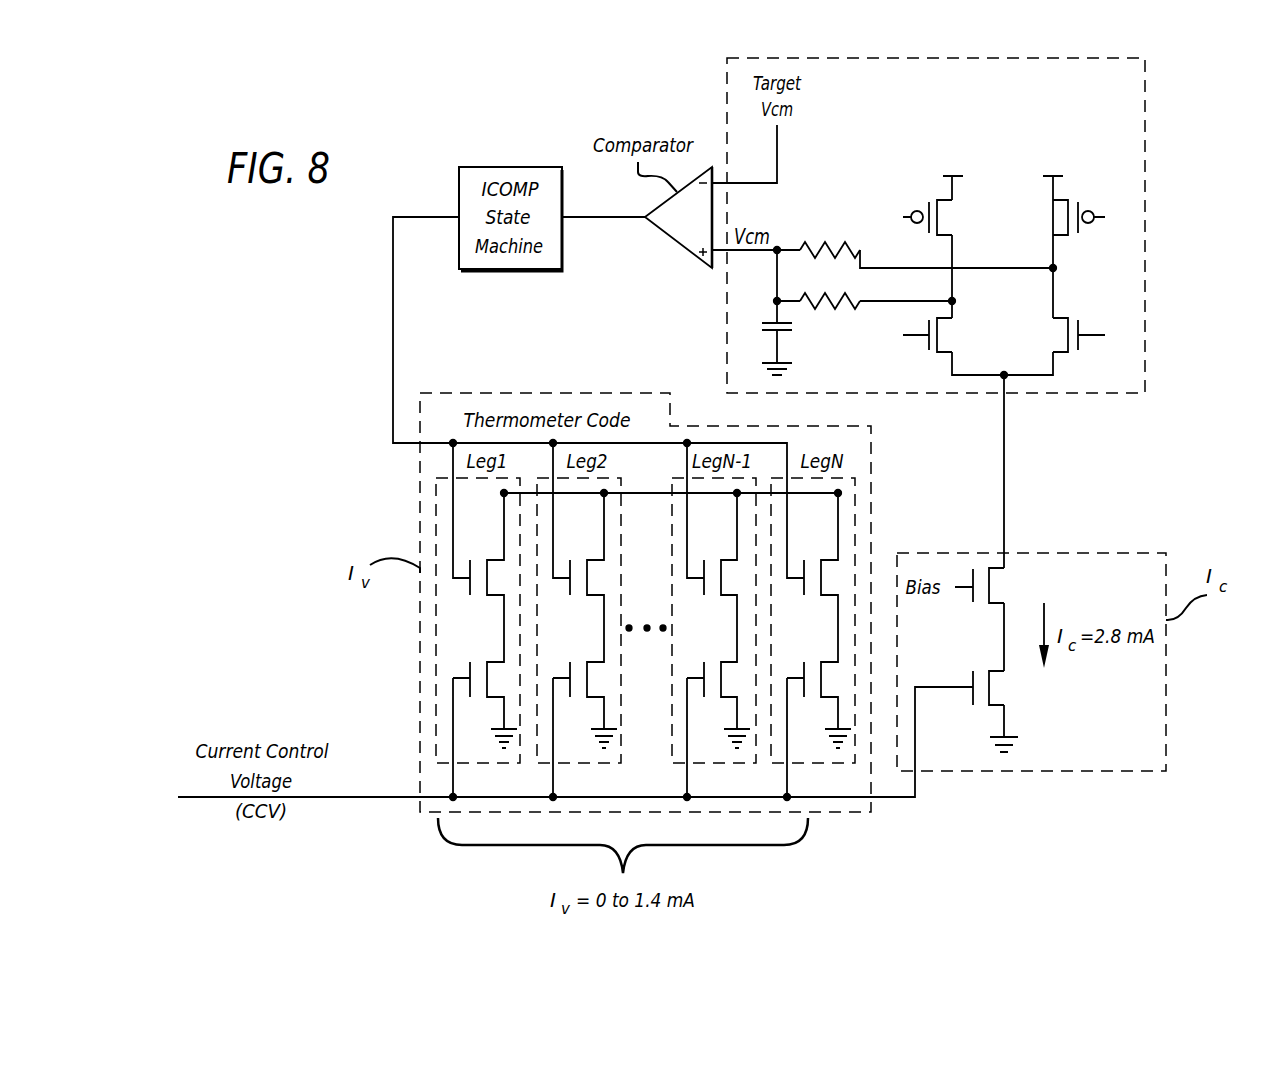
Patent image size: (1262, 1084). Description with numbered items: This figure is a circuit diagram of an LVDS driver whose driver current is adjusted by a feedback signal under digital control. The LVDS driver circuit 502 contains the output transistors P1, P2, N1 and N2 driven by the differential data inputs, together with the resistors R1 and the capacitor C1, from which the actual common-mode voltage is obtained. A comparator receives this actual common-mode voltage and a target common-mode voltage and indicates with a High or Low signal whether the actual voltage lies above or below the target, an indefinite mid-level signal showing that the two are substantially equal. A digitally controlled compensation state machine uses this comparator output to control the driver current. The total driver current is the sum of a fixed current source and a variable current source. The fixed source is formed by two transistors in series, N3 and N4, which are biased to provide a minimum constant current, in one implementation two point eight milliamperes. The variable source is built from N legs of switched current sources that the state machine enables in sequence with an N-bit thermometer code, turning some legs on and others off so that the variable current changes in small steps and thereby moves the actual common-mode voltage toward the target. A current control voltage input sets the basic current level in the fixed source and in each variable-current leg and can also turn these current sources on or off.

The output driver stage 502 is at (1145, 123).
The resistor R1 is at (830, 265).
The capacitor C1 is at (763, 344).
The PMOS transistor P1 is at (939, 217).
The PMOS transistor P2 is at (1068, 217).
The NMOS transistor N1 is at (940, 335).
The NMOS transistor N2 is at (1068, 335).
The transistor N3 is at (993, 585).
The transistor N4 is at (993, 688).